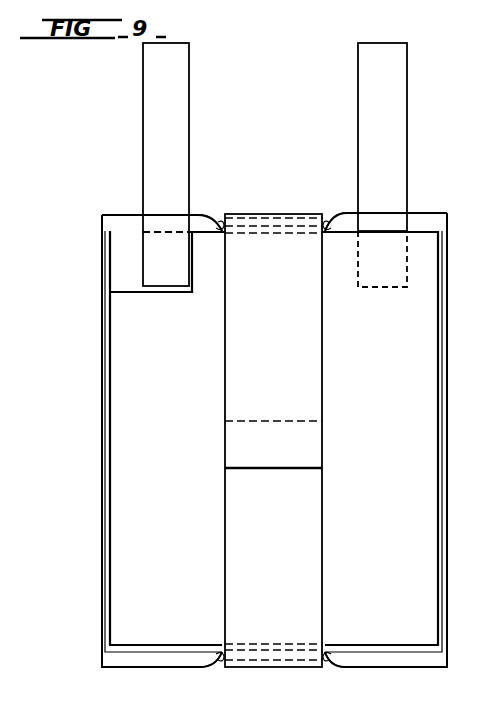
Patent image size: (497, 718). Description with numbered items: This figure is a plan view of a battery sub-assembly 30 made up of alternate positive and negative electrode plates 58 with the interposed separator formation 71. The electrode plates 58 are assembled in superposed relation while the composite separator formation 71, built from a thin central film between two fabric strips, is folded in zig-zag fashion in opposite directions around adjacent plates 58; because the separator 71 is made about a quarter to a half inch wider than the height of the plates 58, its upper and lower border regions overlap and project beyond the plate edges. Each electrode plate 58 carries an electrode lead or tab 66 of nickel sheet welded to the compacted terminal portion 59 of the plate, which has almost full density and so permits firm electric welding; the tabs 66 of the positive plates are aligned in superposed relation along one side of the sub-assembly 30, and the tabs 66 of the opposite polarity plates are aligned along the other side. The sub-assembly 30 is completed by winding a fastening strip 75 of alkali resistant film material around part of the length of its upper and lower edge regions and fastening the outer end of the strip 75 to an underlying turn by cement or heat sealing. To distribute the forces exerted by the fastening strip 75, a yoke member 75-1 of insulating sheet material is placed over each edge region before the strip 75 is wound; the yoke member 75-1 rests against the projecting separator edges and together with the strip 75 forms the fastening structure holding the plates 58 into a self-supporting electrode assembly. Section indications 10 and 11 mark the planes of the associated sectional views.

The battery sub-assembly 30 is at (92, 333).
The electrode plate 58 is at (140, 441).
The compacted terminal portion 59 is at (117, 262).
The electrode lead 66 is at (181, 153).
The composite separator formation 71 is at (106, 473).
The fastening strip 75 is at (322, 381).
The yoke member 75-1 is at (327, 214).
The section line 10- 10 is at (437, 55).
The section line 11- 11 is at (85, 650).